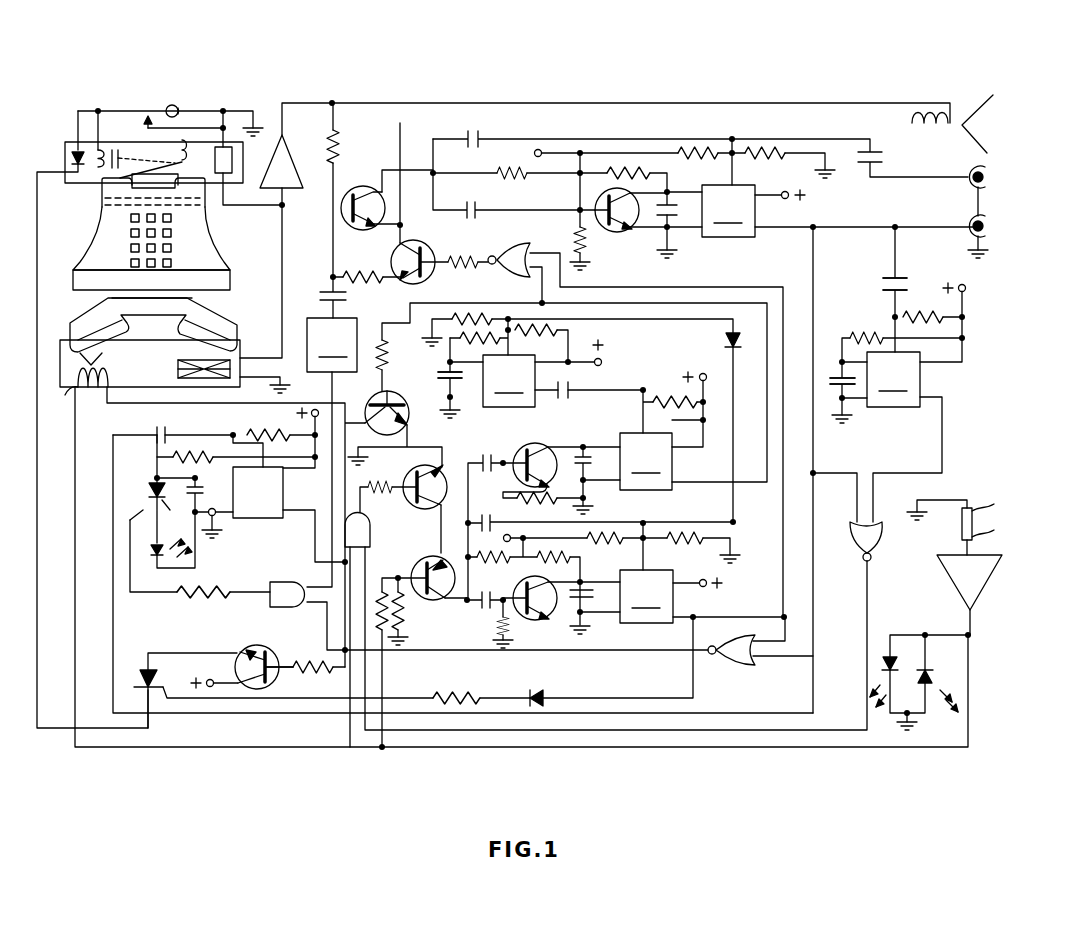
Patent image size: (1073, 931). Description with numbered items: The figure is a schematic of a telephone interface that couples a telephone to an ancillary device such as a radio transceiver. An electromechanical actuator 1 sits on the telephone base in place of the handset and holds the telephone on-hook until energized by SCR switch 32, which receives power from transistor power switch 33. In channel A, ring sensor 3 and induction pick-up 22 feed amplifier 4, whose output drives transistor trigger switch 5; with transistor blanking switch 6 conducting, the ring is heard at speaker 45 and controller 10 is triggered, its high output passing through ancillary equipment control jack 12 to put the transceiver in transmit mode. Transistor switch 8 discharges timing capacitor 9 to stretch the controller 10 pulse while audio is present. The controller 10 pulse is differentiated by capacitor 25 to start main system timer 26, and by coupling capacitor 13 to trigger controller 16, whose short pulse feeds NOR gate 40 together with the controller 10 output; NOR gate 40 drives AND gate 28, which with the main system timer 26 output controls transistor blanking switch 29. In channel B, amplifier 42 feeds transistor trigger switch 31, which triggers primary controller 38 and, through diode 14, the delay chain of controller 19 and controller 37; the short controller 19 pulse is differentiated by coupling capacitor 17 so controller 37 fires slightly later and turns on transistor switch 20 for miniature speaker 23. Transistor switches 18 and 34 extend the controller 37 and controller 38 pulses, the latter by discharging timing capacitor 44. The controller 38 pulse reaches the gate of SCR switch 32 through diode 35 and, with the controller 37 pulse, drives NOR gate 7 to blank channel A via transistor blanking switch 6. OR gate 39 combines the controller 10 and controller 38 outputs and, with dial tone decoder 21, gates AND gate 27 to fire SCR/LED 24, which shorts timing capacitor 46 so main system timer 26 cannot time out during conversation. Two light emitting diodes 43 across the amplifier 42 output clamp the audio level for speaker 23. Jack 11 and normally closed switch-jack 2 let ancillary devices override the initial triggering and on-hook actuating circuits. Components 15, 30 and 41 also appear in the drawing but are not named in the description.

The electromechanical actuator 1 is at (110, 148).
The switch-jack 2 is at (183, 103).
The ring sensor 3 is at (228, 175).
The channel A amplifier 4 is at (283, 160).
The transistor trigger switch 5 is at (361, 186).
The transistor blanking switch 6 is at (391, 256).
The NOR gate 7 is at (511, 274).
The transistor switch 8 is at (594, 197).
The timing capacitor 9 is at (657, 218).
The controller 10 is at (728, 211).
The jack 11 is at (992, 177).
The ancillary equipment control jack 12 is at (992, 226).
The coupling capacitor 13 is at (902, 275).
The diode 14 is at (722, 343).
The capacitor 15 is at (827, 376).
The controller 16 is at (893, 379).
The coupling capacitor 17 is at (577, 386).
The transistor switch 18 is at (522, 443).
The controller 19 is at (509, 381).
The transistor switch 20 is at (390, 392).
The dial tone decoder 21 is at (332, 345).
The induction pick-up 22 is at (236, 365).
The speaker 23 is at (79, 380).
The SCR/LED shorting switch 24 is at (145, 510).
The capacitor 25 is at (175, 431).
The main system timer 26 is at (258, 492).
The AND gate 27 is at (282, 599).
The AND gate 28 is at (368, 546).
The transistor blanking switch 29 is at (412, 509).
The capacitor 30 is at (458, 383).
The transistor trigger switch 31 is at (430, 601).
The SCR switch 32 is at (148, 666).
The transistor power switch 33 is at (262, 645).
The transistor switch 34 is at (529, 620).
The diode 35 is at (548, 695).
The controller 37 is at (646, 461).
The controller 38 is at (646, 596).
The OR gate 39 is at (736, 664).
The NOR gate 40 is at (856, 548).
The resistor 41 is at (960, 534).
The channel B amplifier 42 is at (962, 581).
The light emitting diodes 43 is at (897, 656).
The timing capacitor 44 is at (594, 600).
The speaker 45 is at (988, 128).
The timing capacitor 46 is at (215, 518).